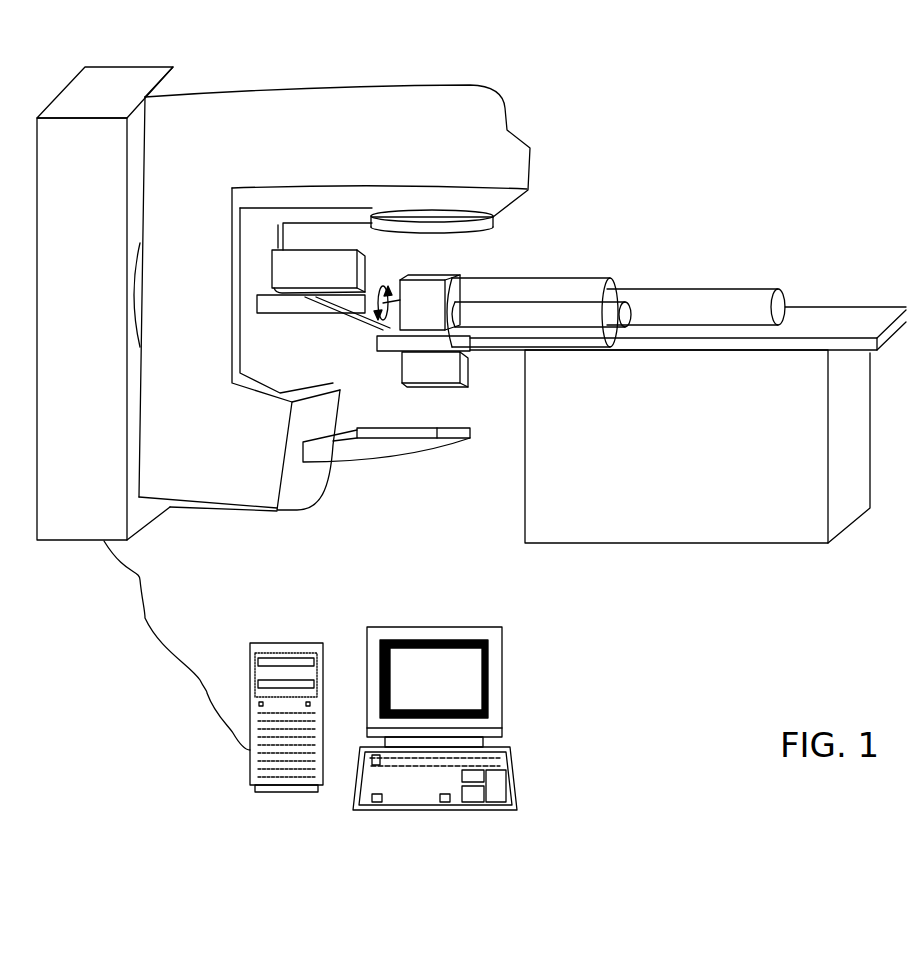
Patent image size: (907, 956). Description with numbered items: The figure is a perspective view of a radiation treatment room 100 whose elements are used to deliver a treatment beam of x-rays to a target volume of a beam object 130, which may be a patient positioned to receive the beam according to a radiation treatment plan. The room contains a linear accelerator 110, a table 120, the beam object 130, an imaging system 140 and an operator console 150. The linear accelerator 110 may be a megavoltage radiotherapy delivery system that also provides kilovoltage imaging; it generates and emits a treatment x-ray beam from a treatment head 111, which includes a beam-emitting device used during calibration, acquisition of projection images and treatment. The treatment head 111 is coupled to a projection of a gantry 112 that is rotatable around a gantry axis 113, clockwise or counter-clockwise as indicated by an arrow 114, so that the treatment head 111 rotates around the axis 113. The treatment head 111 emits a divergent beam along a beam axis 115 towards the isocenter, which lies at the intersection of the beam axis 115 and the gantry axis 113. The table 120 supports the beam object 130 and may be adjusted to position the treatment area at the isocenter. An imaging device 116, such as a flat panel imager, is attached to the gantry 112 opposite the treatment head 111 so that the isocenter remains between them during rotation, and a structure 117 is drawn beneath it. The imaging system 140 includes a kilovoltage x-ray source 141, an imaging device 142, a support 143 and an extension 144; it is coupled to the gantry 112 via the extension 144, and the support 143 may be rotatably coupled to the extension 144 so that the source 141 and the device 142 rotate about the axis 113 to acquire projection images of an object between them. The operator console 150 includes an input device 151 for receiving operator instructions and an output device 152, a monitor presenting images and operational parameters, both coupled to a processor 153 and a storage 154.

The radiation treatment room 100 is at (777, 138).
The linear accelerator 110 is at (556, 140).
The treatment head 111 is at (517, 205).
The gantry 112 is at (312, 88).
The gantry axis 113 is at (356, 304).
The arrow 114 is at (381, 290).
The beam axis 115 is at (430, 244).
The imaging device 116 is at (470, 440).
The breast support platform 117 is at (367, 465).
The table 120 is at (837, 325).
The beam object 130 is at (572, 277).
The imaging system 140 is at (256, 277).
The kilovoltage x-ray source 141 is at (342, 249).
The imaging device 142 is at (465, 363).
The support 143 is at (377, 336).
The extension 144 is at (273, 315).
The operator console 150 is at (343, 675).
The input device 151 is at (515, 793).
The output device 152 is at (502, 678).
The processor 153 is at (301, 686).
The storage 154 is at (285, 642).